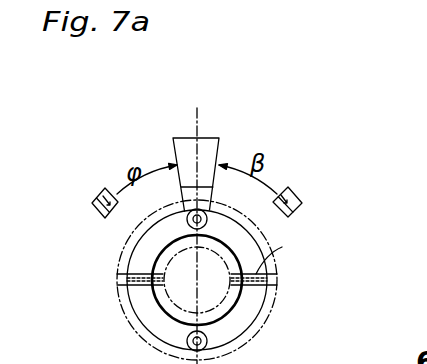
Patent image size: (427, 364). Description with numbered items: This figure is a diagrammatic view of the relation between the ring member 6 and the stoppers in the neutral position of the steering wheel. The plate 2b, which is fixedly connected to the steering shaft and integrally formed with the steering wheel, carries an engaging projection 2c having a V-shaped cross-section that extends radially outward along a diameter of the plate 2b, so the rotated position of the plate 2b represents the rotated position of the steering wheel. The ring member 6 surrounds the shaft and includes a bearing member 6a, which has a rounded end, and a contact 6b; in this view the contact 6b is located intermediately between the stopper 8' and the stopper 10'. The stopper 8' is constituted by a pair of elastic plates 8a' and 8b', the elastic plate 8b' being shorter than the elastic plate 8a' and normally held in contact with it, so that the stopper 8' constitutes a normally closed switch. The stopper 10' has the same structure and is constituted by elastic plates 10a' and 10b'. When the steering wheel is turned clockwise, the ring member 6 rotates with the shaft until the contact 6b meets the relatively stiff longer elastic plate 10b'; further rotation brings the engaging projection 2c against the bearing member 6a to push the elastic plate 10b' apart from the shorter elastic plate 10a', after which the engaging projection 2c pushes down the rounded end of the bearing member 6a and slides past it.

The ring member 6 is at (140, 299).
The bearing member 6a is at (188, 332).
The contact 6b is at (202, 146).
The plate 2b is at (272, 320).
The engaging projection 2c is at (282, 247).
The stopper 8' is at (68, 167).
The elastic plate 8a' is at (89, 170).
The elastic plate 8b' is at (68, 182).
The stopper 10' is at (327, 161).
The elastic plate 10a' is at (300, 170).
The elastic plate 10b' is at (322, 181).